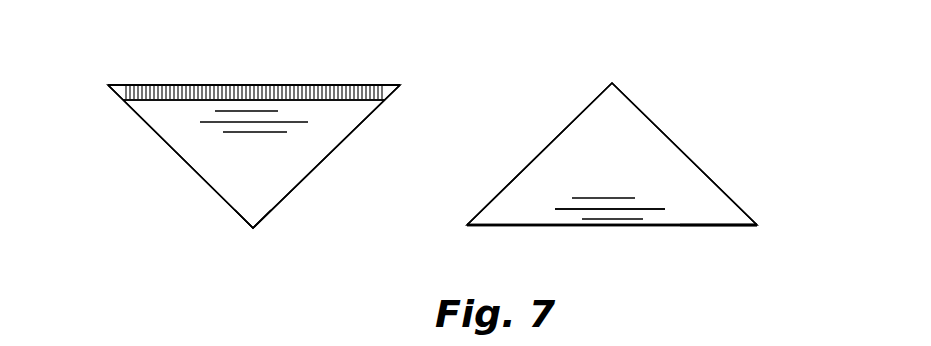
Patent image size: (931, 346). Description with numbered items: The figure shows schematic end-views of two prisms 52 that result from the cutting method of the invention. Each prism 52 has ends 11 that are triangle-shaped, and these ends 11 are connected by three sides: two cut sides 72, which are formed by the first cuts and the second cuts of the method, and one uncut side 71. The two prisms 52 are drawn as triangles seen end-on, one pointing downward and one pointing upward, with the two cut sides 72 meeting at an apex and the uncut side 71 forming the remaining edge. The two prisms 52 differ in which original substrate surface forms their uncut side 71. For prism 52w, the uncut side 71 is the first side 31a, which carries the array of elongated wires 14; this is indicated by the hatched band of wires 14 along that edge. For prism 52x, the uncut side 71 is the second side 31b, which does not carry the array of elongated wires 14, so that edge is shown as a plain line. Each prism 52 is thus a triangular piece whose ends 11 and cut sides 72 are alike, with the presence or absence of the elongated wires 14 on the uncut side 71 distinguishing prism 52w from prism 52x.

The ends 11 is at (345, 128).
The array of elongated wires 14 is at (150, 87).
The first side 31a is at (233, 84).
The second side 31b is at (540, 228).
The uncut side 71 is at (305, 83).
The cut sides 72 is at (177, 158).
The prisms 52 is at (258, 216).
The prism 52w is at (249, 170).
The prism 52x is at (607, 150).